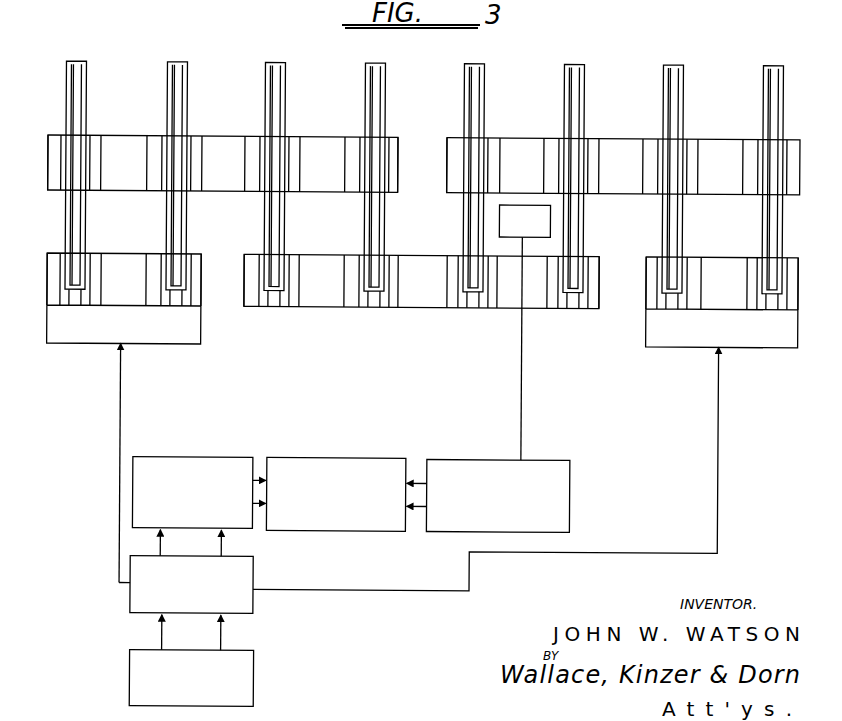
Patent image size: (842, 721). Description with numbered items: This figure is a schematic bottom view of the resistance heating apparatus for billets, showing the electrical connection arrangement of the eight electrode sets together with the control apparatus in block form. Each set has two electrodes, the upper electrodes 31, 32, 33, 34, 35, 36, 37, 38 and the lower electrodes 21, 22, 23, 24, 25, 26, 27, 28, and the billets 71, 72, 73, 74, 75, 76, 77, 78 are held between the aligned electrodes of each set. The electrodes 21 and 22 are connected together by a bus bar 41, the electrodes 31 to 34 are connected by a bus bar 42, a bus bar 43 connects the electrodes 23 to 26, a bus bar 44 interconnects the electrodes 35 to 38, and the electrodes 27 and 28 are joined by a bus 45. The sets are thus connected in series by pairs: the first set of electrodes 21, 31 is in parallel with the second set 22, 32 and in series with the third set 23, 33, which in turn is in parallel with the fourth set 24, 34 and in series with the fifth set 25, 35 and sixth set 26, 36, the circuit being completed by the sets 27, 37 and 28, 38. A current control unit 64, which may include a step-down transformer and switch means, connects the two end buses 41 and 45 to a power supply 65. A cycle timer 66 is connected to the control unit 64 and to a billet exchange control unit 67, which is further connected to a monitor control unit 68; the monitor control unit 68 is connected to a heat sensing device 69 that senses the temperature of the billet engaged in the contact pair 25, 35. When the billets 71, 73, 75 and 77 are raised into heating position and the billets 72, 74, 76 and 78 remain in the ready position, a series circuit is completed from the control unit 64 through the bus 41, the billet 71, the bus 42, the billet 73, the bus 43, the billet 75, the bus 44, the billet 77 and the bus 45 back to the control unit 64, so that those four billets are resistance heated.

The electrode 21 is at (53, 262).
The electrode 22 is at (152, 262).
The electrode 23 is at (252, 261).
The electrode 24 is at (352, 260).
The electrode 25 is at (452, 259).
The electrode 26 is at (556, 259).
The electrode 27 is at (652, 258).
The electrode 28 is at (755, 257).
The electrode 31 is at (97, 146).
The electrode 32 is at (193, 142).
The electrode 33 is at (292, 143).
The electrode 34 is at (394, 146).
The electrode 35 is at (451, 178).
The electrode 36 is at (552, 142).
The electrode 37 is at (650, 179).
The electrode 38 is at (755, 138).
The bus bar 41 is at (95, 333).
The bus bar 42 is at (223, 151).
The bus bar 43 is at (535, 297).
The bus bar 44 is at (630, 154).
The bus 45 is at (743, 338).
The current control unit 64 is at (258, 588).
The power supply 65 is at (258, 678).
The cycle timer 66 is at (188, 455).
The billet exchange control unit 67 is at (370, 428).
The monitor control unit 68 is at (490, 456).
The heat sensing device 69 is at (520, 224).
The billet 71 is at (78, 102).
The billet 72 is at (177, 97).
The billet 73 is at (277, 95).
The billet 74 is at (378, 101).
The billet 75 is at (478, 102).
The billet 76 is at (577, 101).
The billet 77 is at (678, 109).
The billet 78 is at (776, 110).